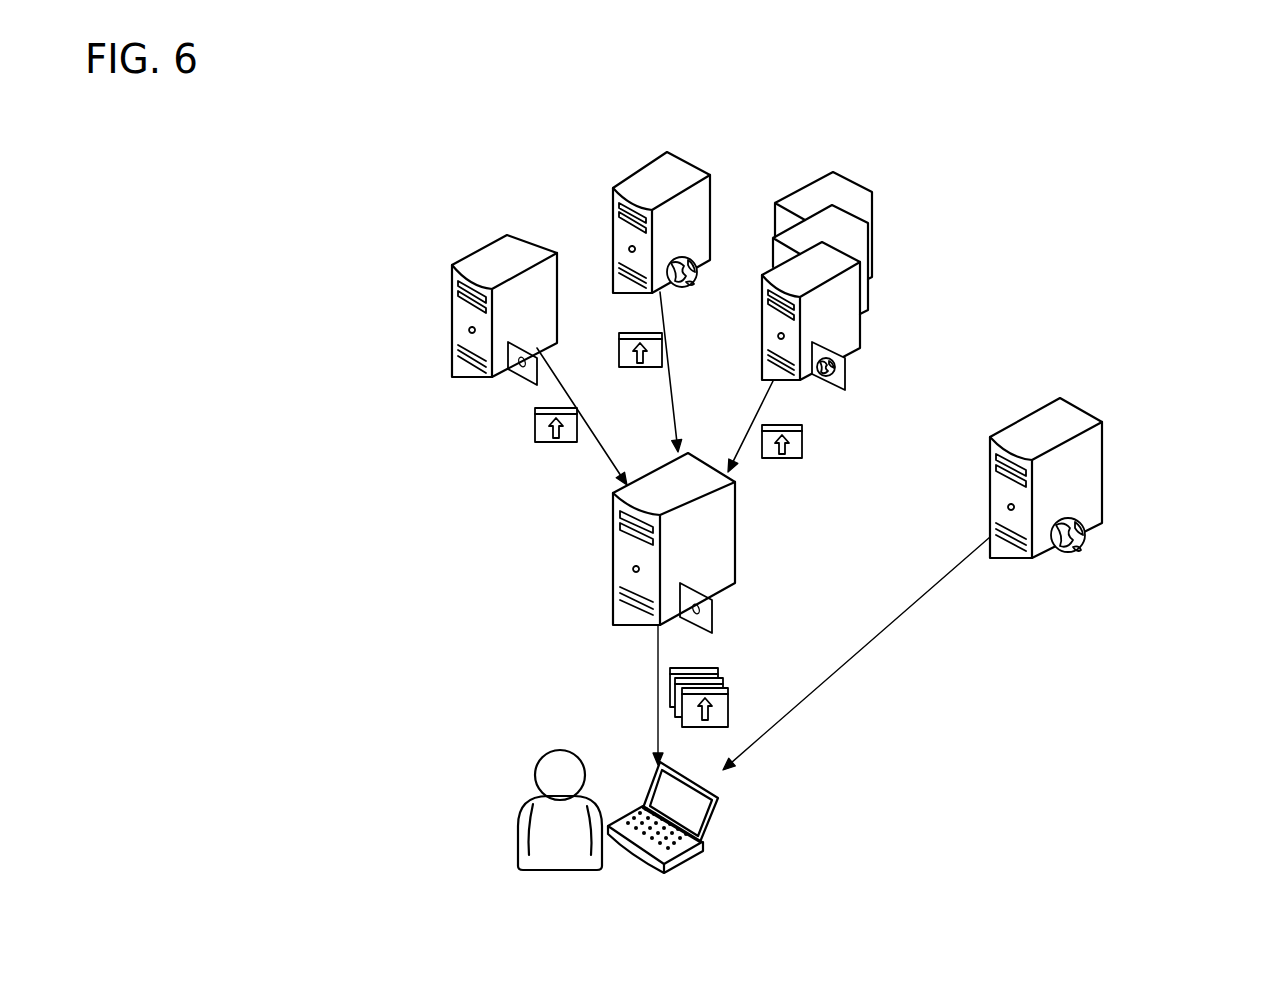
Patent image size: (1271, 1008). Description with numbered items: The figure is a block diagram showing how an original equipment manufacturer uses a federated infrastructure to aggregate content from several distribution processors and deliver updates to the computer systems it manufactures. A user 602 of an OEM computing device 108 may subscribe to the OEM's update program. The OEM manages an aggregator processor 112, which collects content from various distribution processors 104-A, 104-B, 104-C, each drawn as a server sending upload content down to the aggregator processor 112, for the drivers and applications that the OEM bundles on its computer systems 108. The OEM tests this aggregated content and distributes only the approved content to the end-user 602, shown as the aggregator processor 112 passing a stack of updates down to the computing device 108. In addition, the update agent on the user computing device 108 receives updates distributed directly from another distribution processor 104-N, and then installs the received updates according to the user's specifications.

The distribution processor 104-A is at (497, 241).
The distribution processor 104-B is at (703, 172).
The distribution processor 104-C is at (868, 193).
The distribution processor 104-N is at (1085, 412).
The aggregator processor 112 is at (737, 538).
The OEM computer system 108 is at (712, 831).
The user 602 is at (545, 753).